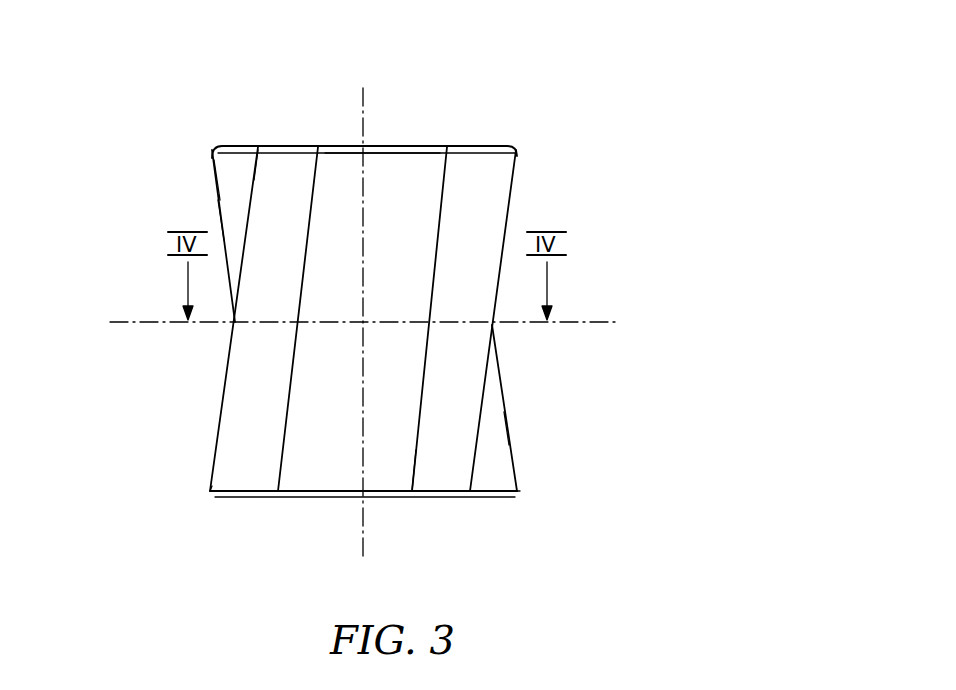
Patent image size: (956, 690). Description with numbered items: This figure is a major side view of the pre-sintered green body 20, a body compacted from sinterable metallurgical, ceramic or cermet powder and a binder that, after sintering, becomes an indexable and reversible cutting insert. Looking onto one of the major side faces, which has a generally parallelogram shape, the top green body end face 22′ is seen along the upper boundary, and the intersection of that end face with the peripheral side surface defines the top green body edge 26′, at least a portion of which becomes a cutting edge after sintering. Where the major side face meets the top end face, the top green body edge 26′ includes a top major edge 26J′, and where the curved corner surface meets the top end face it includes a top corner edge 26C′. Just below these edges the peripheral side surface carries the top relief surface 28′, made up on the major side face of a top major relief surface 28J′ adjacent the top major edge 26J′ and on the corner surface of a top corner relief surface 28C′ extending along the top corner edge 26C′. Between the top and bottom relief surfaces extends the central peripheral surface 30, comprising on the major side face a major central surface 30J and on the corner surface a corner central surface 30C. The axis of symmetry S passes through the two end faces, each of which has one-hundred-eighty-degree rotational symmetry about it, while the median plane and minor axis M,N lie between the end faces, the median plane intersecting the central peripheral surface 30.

The green body 20 is at (562, 190).
The top green body end face 22′ is at (235, 182).
The top green body edge 26′ is at (213, 198).
The top major edge 26J′ is at (217, 218).
The top corner edge 26C′ is at (210, 492).
The top relief surface 28′ is at (257, 428).
The top major relief surface 28J′ is at (270, 187).
The top corner relief surface 28C′ is at (297, 147).
The central peripheral surface 30 is at (417, 197).
The major central surface 30J is at (345, 170).
The corner central surface 30C is at (400, 147).
The axis of symmetry S is at (578, 325).
The median plane and minor axis M,N is at (362, 533).